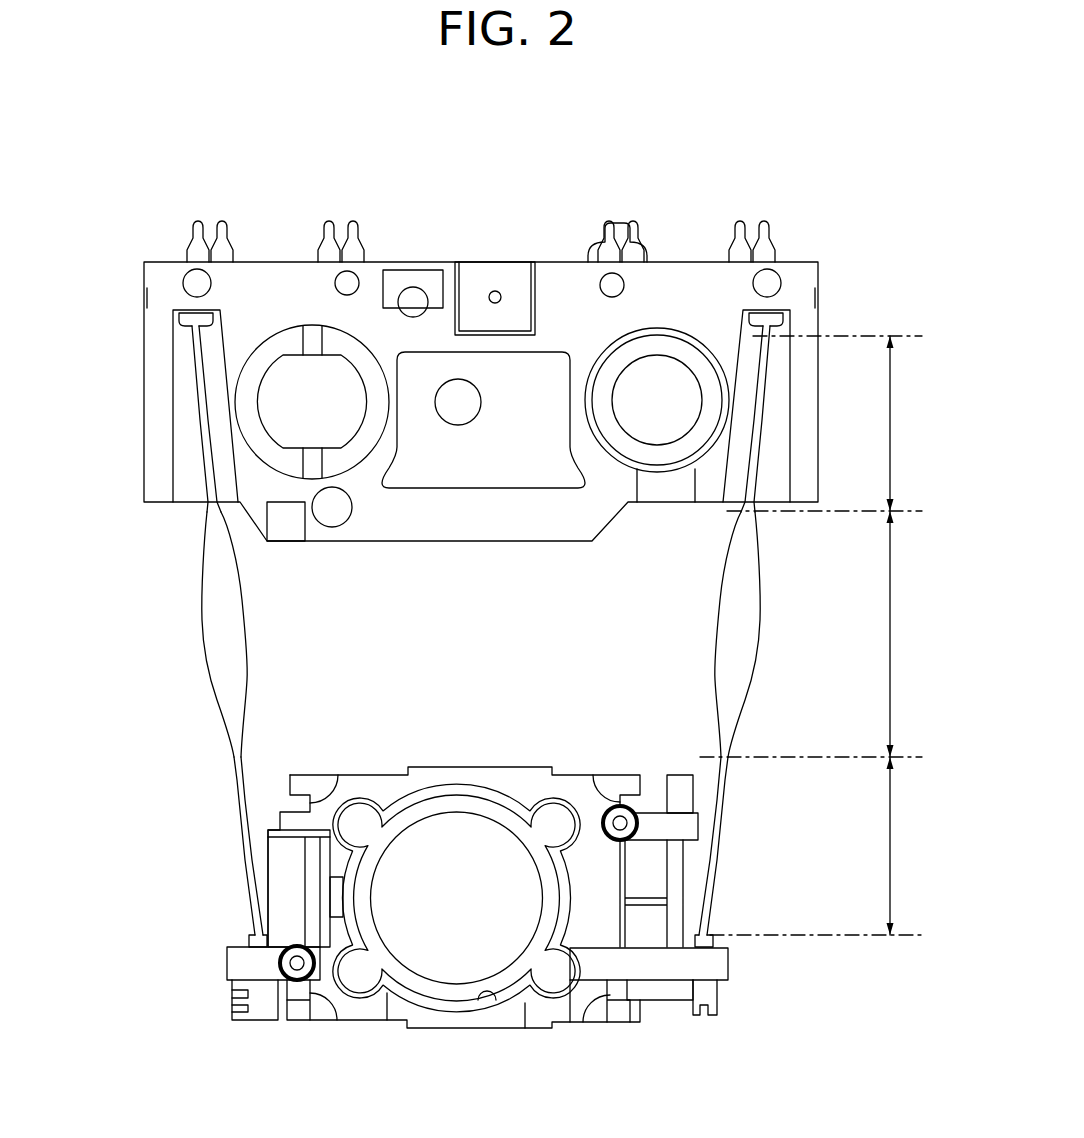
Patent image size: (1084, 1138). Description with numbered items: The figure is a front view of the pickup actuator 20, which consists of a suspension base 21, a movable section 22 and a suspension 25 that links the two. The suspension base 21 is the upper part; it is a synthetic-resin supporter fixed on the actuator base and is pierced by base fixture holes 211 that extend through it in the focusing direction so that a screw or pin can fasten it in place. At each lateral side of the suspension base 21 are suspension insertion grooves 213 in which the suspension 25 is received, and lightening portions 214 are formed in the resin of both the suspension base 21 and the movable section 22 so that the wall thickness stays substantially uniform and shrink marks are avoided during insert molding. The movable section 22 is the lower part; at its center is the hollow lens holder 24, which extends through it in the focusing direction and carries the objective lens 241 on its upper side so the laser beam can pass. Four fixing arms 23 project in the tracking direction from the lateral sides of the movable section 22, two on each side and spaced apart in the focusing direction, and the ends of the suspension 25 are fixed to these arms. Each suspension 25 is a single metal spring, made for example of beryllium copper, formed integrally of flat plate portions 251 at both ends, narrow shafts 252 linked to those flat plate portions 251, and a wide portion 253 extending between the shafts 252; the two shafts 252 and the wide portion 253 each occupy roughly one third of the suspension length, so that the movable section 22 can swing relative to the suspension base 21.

The pickup actuator 20 is at (233, 176).
The suspension base 21 is at (558, 272).
The base fixture holes 211 is at (277, 338).
The suspension insertion grooves 213 is at (175, 372).
The lightening portions 214 is at (508, 352).
The movable section 22 is at (360, 1020).
The fixing arms 23 is at (235, 968).
The lens holder 24 is at (492, 990).
The objective lens 241 is at (438, 955).
The suspension 25 is at (190, 590).
The flat plate portions 251 is at (782, 318).
The shafts 252 is at (192, 405).
The wide portion 253 is at (212, 630).